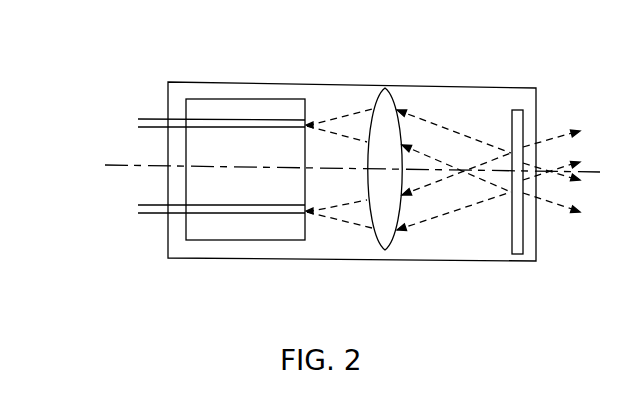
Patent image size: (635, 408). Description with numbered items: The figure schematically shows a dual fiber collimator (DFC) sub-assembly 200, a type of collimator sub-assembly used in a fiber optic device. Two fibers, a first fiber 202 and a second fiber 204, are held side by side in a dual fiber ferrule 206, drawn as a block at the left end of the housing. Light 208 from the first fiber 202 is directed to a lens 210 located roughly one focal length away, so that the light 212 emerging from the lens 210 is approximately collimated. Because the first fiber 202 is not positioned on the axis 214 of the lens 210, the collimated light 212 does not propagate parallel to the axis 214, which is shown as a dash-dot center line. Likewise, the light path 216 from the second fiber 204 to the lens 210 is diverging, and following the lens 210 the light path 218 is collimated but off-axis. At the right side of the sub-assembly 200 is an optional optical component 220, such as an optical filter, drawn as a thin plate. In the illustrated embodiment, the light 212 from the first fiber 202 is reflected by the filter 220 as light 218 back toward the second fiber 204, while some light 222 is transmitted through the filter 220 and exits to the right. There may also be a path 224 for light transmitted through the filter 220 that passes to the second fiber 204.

The dual fiber collimator sub-assembly 200 is at (348, 260).
The first fiber 202 is at (153, 119).
The second fiber 204 is at (150, 215).
The dual fiber ferrule 206 is at (203, 98).
The light from the first fiber 208 is at (340, 115).
The lens 210 is at (387, 88).
The collimated light 212 is at (433, 122).
The axis of the lens 214 is at (242, 168).
The light path from the second fiber 216 is at (342, 220).
The collimated off-axis light path 218 is at (432, 218).
The optical component 220 is at (519, 266).
The transmitted light 222 is at (560, 209).
The path for transmitted light 224 is at (555, 135).